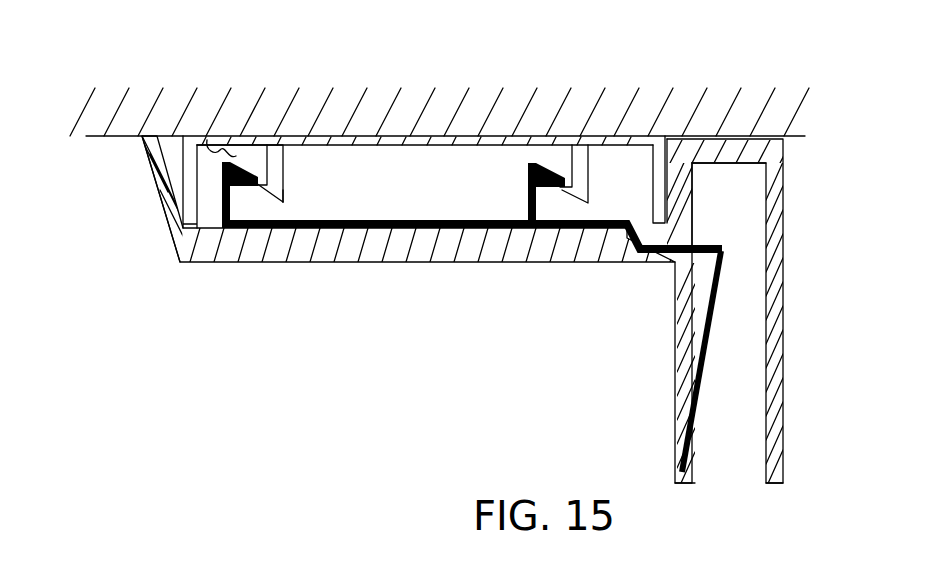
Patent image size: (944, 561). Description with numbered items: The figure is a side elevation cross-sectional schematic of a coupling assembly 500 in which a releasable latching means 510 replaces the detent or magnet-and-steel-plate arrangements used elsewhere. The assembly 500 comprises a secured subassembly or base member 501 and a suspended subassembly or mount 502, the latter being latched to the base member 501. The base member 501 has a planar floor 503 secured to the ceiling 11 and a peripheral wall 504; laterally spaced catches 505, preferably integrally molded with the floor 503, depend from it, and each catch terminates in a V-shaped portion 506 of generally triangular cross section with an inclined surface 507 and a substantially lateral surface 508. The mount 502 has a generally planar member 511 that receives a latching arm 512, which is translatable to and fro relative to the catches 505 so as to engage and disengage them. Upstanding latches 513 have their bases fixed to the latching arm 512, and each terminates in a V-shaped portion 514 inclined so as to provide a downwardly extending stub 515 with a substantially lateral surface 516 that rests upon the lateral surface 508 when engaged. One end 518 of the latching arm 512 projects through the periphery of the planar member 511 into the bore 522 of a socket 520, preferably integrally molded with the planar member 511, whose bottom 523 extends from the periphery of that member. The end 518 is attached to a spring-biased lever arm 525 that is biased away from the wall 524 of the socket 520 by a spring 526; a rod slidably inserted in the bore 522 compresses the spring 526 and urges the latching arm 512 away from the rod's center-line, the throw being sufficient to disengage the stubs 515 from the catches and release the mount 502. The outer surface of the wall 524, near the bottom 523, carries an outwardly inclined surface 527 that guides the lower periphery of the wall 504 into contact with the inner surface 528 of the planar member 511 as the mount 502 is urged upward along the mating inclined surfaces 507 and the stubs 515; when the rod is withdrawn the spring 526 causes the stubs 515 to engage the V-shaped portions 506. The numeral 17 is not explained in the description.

The ceiling 11 is at (392, 122).
The side wall 17 is at (150, 172).
The assembly 500 is at (365, 201).
The base member 501 is at (555, 128).
The mount 502 is at (155, 254).
The planar floor 503 is at (420, 150).
The peripheral wall 504 is at (188, 170).
The catches 505 is at (293, 140).
The V-shaped portion 506 is at (290, 193).
The inclined surface 507 is at (266, 210).
The lateral surface 508 is at (262, 185).
The latching means 510 is at (211, 217).
The planar member 511 is at (560, 262).
The latching arm 512 is at (397, 222).
The latches 513 is at (527, 205).
The V-shaped portion 514 is at (207, 140).
The stub 515 is at (248, 175).
The lateral surface 516 is at (200, 188).
The end of latching arm 518 is at (697, 245).
The socket 520 is at (783, 303).
The bore 522 is at (750, 488).
The bottom of socket 523 is at (745, 165).
The wall of socket 524 is at (767, 335).
The lever arm 525 is at (700, 345).
The spring 526 is at (712, 292).
The inclined surface 527 is at (683, 160).
The inner surface 528 is at (637, 220).